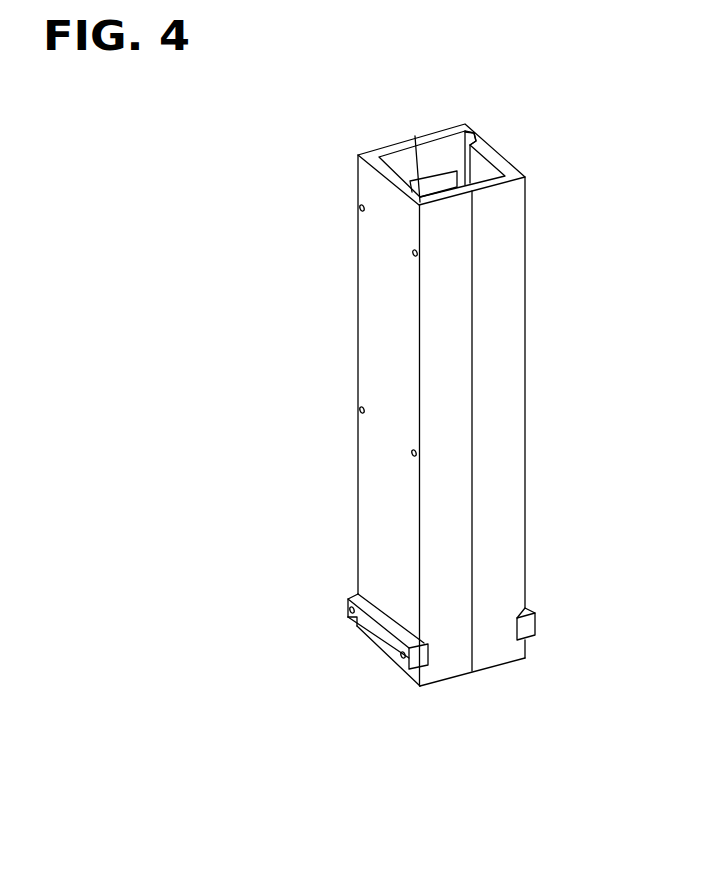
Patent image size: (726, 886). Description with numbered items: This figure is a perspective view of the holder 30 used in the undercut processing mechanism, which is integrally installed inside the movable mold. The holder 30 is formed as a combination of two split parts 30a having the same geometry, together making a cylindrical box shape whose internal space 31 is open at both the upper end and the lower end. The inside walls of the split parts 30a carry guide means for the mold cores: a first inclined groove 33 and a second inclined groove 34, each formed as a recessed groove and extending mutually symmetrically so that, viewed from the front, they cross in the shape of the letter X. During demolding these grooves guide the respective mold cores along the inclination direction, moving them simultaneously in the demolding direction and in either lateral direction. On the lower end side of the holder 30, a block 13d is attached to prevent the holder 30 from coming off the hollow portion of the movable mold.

The holder 30 is at (550, 299).
The split part 30a is at (357, 378).
The internal space 31 is at (430, 152).
The first inclined groove 33 is at (420, 207).
The second inclined groove 34 is at (472, 132).
The block 13d is at (346, 600).